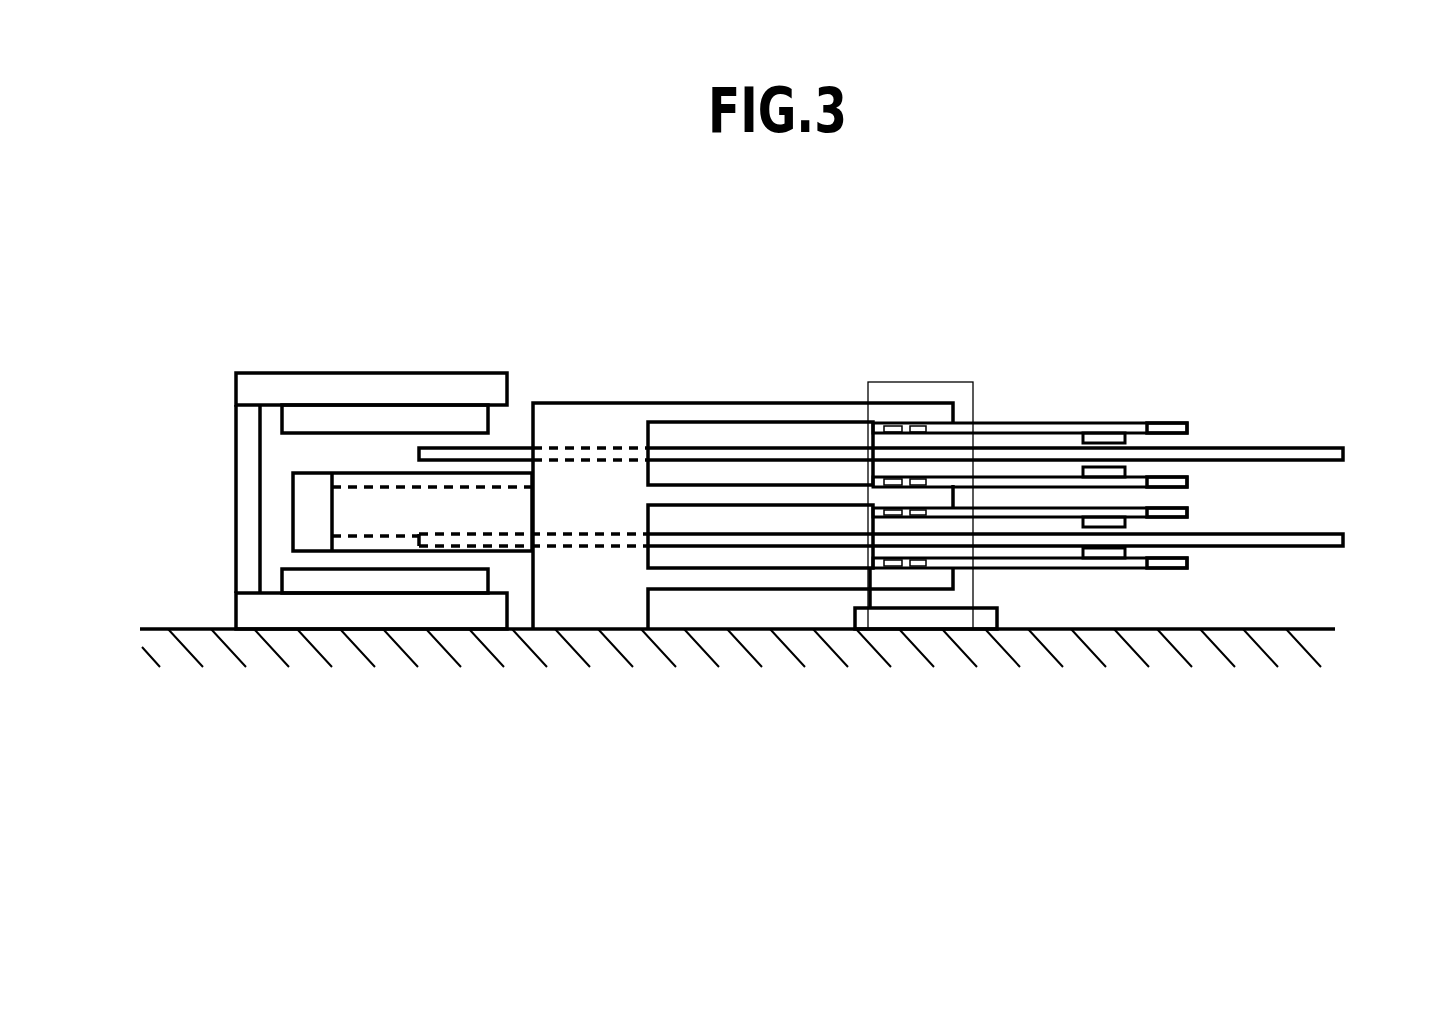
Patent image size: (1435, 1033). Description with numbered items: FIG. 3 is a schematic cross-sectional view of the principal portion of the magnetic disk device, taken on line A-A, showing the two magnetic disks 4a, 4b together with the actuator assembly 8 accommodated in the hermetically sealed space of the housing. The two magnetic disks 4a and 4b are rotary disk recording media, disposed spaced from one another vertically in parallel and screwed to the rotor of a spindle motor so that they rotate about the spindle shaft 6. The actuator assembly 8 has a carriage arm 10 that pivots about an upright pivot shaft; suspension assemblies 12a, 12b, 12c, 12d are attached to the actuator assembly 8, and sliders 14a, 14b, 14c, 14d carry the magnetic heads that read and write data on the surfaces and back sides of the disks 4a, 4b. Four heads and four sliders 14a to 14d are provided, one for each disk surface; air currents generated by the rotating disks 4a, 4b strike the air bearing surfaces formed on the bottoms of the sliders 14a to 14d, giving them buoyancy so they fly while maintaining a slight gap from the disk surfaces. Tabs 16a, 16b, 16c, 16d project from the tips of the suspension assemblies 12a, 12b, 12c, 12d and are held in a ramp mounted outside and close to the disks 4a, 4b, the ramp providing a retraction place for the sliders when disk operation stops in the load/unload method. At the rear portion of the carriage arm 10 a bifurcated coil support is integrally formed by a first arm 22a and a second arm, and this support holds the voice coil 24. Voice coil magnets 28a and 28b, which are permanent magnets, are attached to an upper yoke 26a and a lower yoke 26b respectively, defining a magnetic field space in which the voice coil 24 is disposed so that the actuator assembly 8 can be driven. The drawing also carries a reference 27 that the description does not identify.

The magnetic disk 4a is at (1343, 455).
The magnetic disk 4b is at (1343, 540).
The spindle shaft 6 is at (572, 403).
The actuator assembly 8 is at (781, 348).
The carriage arm 10 is at (702, 403).
The suspension assembly 12a is at (1045, 423).
The suspension assembly 12b is at (995, 477).
The suspension assembly 12c is at (1040, 512).
The suspension assembly 12d is at (1013, 568).
The slider 14a is at (1122, 433).
The slider 14b is at (1093, 433).
The slider 14c is at (1107, 522).
The slider 14d is at (1118, 558).
The tab 16a is at (1168, 425).
The tab 16b is at (1187, 477).
The tab 16c is at (1187, 513).
The tab 16d is at (1187, 566).
The first arm 22a is at (352, 552).
The voice coil 24 is at (362, 515).
The upper yoke 26a is at (337, 395).
The lower yoke 26b is at (408, 610).
The gap 27 is at (343, 458).
The voice coil magnet 28a is at (432, 422).
The voice coil magnet 28b is at (450, 580).